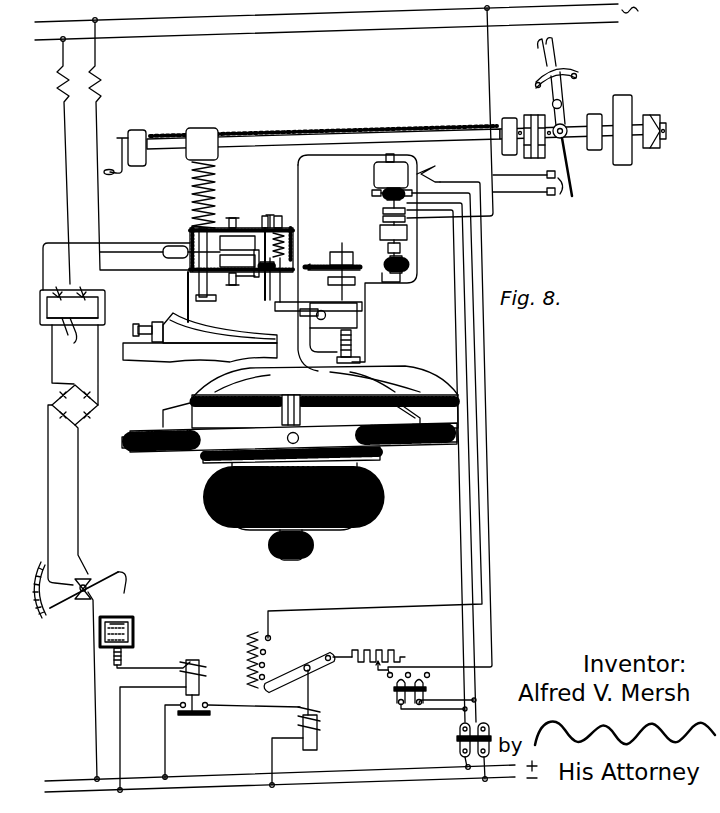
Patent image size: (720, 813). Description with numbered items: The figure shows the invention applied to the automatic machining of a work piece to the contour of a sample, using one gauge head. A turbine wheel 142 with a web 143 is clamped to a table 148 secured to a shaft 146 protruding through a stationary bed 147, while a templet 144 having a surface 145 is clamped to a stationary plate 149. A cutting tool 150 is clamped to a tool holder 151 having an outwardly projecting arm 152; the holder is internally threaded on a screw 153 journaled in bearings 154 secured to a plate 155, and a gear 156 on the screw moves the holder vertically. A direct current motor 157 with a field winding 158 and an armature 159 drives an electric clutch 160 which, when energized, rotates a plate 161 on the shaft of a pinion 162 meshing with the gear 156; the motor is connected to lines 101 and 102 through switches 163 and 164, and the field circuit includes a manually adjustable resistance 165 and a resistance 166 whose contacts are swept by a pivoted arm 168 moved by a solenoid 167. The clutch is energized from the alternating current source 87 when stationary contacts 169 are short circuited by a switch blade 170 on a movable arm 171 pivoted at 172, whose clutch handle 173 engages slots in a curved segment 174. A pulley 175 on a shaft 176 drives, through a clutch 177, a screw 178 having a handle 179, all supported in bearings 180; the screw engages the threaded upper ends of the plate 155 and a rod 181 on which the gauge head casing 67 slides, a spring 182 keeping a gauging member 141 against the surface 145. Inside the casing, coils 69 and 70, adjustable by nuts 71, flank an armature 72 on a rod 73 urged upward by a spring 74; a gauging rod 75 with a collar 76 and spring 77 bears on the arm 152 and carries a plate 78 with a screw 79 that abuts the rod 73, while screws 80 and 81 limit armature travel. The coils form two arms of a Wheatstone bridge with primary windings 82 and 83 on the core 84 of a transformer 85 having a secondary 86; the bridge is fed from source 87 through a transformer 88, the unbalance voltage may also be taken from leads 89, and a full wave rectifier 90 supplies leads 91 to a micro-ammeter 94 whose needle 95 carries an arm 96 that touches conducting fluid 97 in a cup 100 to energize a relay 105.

The casing 67 is at (192, 230).
The coil 69 is at (238, 236).
The coil 70 is at (240, 287).
The nuts 71 is at (232, 219).
The armature 72 is at (232, 287).
The rod 73 is at (271, 284).
The helical compression spring 74 is at (275, 268).
The gauging rod 75 is at (282, 290).
The collar 76 is at (288, 247).
The helical compression spring 77 is at (295, 240).
The plate 78 is at (282, 218).
The adjustable screw 79 is at (272, 218).
The adjustable screw 80 is at (265, 215).
The adjustable screw 81 is at (257, 278).
The primary winding 82 is at (57, 285).
The primary winding 83 is at (82, 285).
The magnetic core 84 is at (100, 322).
The transformer 85 is at (104, 312).
The secondary winding 86 is at (70, 337).
The alternating current source 87 is at (205, 20).
The transformer 88 is at (97, 87).
The leads 89 is at (126, 243).
The full wave rectifier 90 is at (80, 424).
The leads 91 is at (78, 460).
The micro-ammeter 94 is at (42, 620).
The indicating needle 95 is at (66, 604).
The metallic arm 96 is at (128, 578).
The electrically conducting fluid 97 is at (122, 618).
The metallic cup 100 is at (134, 634).
The line 101 is at (388, 762).
The line 102 is at (408, 776).
The relay 105 is at (194, 658).
The gauging member 141 is at (188, 294).
The turbine wheel 142 is at (310, 397).
The web 143 is at (352, 376).
The templet 144 is at (168, 332).
The surface 145 is at (230, 328).
The shaft 146 is at (280, 545).
The stationary bed 147 is at (232, 495).
The table 148 is at (165, 452).
The stationary plate 149 is at (150, 360).
The cutting tool 150 is at (312, 356).
The tool holder 151 is at (357, 312).
The outwardly projecting arm 152 is at (300, 314).
The screw 153 is at (352, 344).
The bearings 154 is at (355, 368).
The plate 155 is at (298, 180).
The gear 156 is at (318, 264).
The direct current motor 157 is at (383, 190).
The stationary field winding 158 is at (440, 173).
The rotatable armature 159 is at (391, 171).
The electric clutch 160 is at (383, 215).
The plate 161 is at (388, 250).
The pinion 162 is at (405, 265).
The switch 163 is at (458, 750).
The switch 164 is at (394, 690).
The manually adjustable resistance 165 is at (380, 650).
The resistance 166 is at (250, 640).
The solenoid 167 is at (318, 735).
The pivoted arm 168 is at (300, 668).
The stationary contacts 169 is at (530, 193).
The switch blade 170 is at (576, 188).
The movable arm 171 is at (566, 93).
The pivot 172 is at (563, 105).
The clutch handle 173 is at (556, 50).
The stationary curved segment 174 is at (572, 73).
The pulley 175 is at (623, 165).
The shaft 176 is at (650, 118).
The clutch 177 is at (538, 158).
The screw 178 is at (436, 132).
The handle 179 is at (114, 178).
The bearings 180 is at (657, 150).
The rod 181 is at (210, 302).
The helical compression spring 182 is at (220, 190).